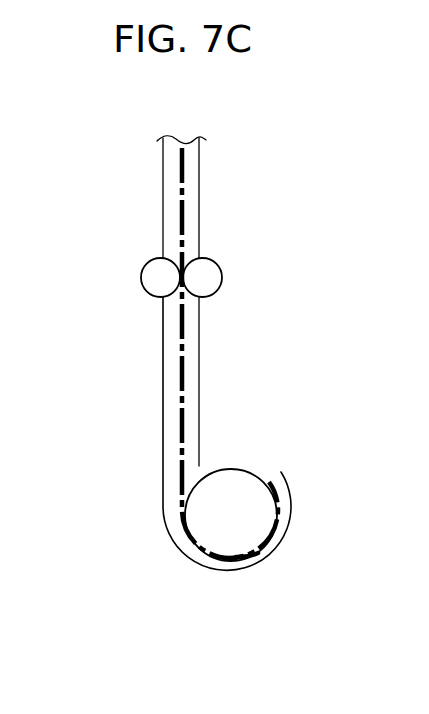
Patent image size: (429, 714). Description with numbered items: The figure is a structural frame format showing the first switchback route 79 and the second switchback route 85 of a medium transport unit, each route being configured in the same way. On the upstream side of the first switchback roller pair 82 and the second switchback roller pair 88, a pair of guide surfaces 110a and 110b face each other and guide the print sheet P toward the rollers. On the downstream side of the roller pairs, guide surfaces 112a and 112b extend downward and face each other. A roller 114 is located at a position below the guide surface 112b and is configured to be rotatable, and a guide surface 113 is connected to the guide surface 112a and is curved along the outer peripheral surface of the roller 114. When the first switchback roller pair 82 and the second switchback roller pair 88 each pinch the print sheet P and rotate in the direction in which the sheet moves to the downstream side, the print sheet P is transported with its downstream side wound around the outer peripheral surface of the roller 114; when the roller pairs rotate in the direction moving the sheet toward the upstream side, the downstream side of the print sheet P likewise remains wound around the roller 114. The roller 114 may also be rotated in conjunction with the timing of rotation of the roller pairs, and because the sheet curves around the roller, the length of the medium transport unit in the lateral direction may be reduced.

The guide surface 110a is at (163, 197).
The guide surface 110b is at (199, 197).
The guide surface 112a is at (163, 344).
The guide surface 112b is at (199, 344).
The first switchback roller pair 82 is at (231, 277).
The second switchback roller pair 88 is at (222, 277).
The print sheet P is at (193, 353).
The roller 114 is at (253, 474).
The guide surface 113 is at (247, 560).
The first switchback route 79 is at (364, 388).
The second switchback route 85 is at (337, 405).